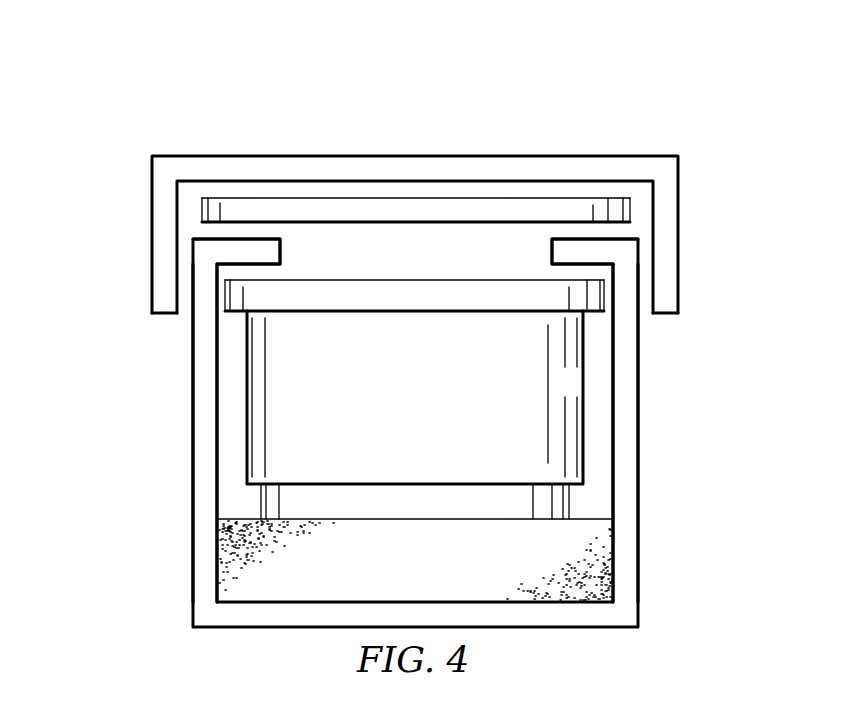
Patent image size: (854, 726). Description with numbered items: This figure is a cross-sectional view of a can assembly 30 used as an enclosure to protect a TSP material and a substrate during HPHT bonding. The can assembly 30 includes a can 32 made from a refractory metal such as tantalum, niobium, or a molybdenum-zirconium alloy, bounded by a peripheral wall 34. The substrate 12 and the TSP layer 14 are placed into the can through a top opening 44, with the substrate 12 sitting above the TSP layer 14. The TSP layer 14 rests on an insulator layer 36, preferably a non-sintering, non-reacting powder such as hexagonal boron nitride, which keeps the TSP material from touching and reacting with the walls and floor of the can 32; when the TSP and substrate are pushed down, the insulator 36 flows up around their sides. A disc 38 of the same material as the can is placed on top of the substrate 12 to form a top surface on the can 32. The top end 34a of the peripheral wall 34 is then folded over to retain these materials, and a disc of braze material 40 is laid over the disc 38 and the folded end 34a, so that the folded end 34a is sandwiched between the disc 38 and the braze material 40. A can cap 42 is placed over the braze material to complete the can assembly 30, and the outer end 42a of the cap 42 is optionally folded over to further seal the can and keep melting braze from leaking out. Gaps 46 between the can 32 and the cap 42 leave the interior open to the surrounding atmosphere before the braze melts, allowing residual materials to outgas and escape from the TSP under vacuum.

The can assembly 30 is at (607, 92).
The can cap 42 is at (513, 162).
The outer end of the cap 42a is at (167, 214).
The braze material disc 40 is at (270, 212).
The top opening 44 is at (404, 262).
The can 32 is at (642, 557).
The peripheral wall 34 is at (203, 437).
The top end of the peripheral wall 34a is at (272, 245).
The gaps 46 is at (185, 314).
The disc 38 is at (477, 293).
The substrate 12 is at (557, 392).
The TSP layer 14 is at (353, 500).
The insulator layer 36 is at (238, 558).